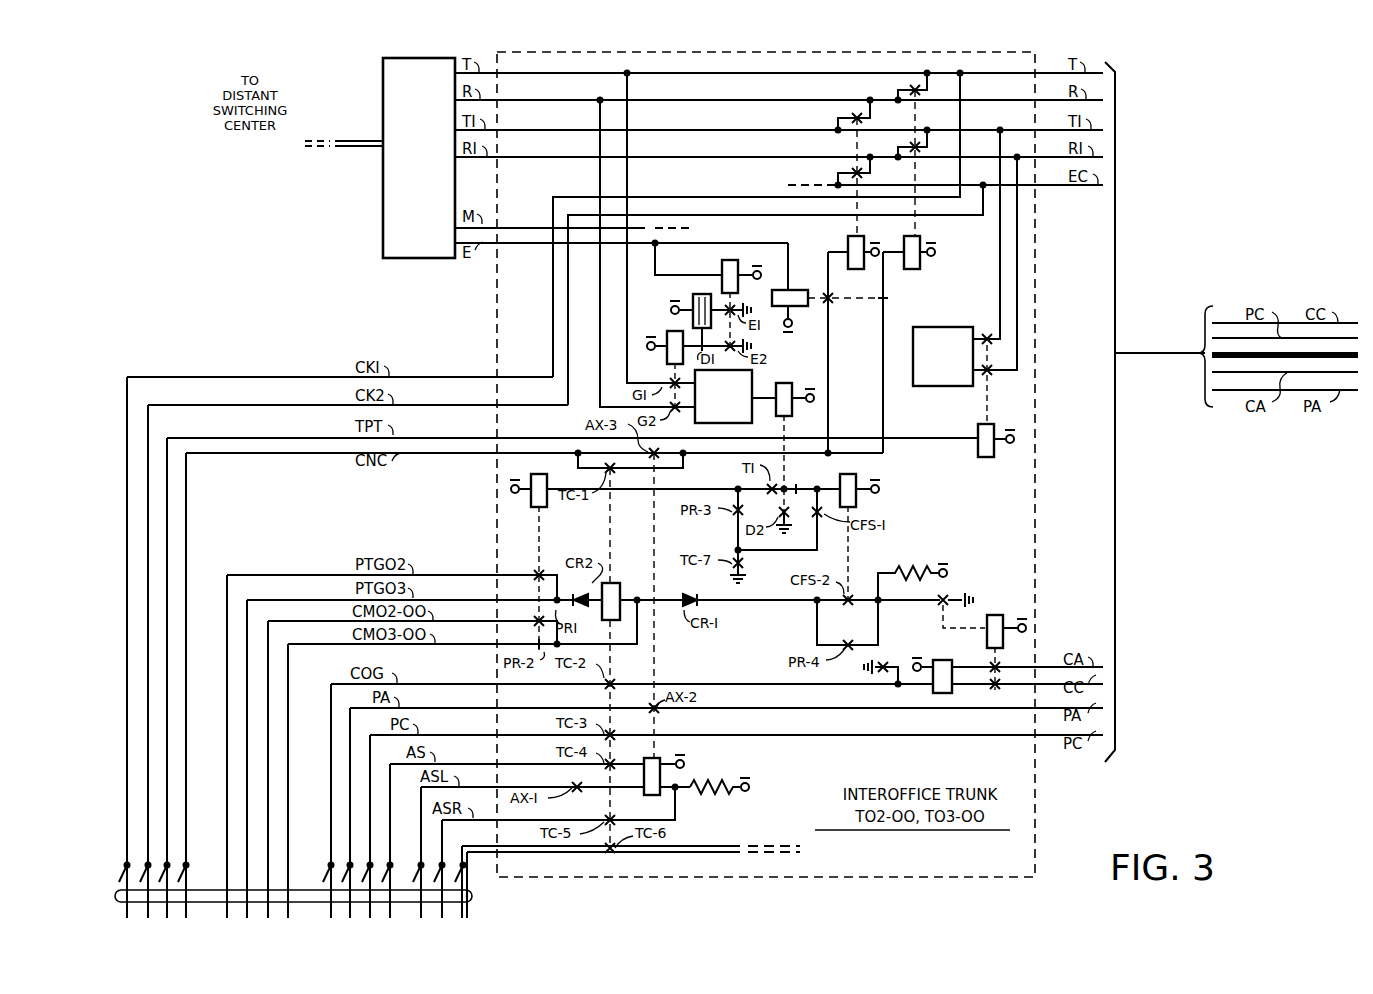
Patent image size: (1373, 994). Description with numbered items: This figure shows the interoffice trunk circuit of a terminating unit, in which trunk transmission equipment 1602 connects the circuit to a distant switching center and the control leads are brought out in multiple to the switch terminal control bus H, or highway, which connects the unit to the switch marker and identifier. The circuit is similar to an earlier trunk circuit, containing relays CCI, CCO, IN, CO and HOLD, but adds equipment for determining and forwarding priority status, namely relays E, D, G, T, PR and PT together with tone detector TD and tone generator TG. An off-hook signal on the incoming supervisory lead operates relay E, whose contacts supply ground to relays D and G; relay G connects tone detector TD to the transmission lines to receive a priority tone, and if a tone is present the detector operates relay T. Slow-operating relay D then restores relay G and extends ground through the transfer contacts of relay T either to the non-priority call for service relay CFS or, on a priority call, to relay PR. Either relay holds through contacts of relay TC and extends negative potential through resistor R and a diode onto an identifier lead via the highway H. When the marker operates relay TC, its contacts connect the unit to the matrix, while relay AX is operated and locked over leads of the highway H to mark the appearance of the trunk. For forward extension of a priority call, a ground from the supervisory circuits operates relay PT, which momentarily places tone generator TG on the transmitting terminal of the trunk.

The trunk transmission equipment 1602 is at (396, 181).
The relay CCI is at (848, 246).
The relay CCO is at (922, 248).
The relay IN is at (821, 289).
The relay E is at (722, 273).
The relay D is at (690, 302).
The relay G is at (666, 335).
The tone detector TD is at (734, 420).
The relay T is at (790, 386).
The tone generator TG is at (918, 330).
The relay PT is at (976, 434).
The relay PR is at (529, 472).
The call for service relay CFS is at (856, 480).
The relay TC is at (610, 584).
The resistor R is at (913, 564).
The relay HOLD is at (1018, 586).
The relay CO is at (936, 660).
The relay AX is at (656, 796).
The switch terminal control bus H is at (478, 896).